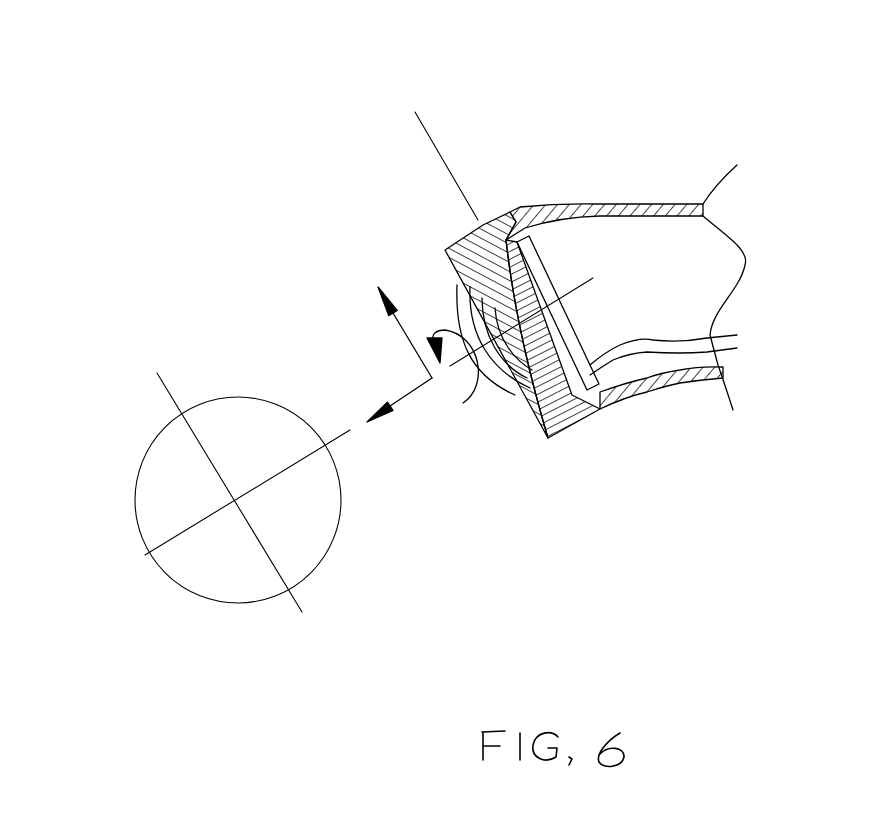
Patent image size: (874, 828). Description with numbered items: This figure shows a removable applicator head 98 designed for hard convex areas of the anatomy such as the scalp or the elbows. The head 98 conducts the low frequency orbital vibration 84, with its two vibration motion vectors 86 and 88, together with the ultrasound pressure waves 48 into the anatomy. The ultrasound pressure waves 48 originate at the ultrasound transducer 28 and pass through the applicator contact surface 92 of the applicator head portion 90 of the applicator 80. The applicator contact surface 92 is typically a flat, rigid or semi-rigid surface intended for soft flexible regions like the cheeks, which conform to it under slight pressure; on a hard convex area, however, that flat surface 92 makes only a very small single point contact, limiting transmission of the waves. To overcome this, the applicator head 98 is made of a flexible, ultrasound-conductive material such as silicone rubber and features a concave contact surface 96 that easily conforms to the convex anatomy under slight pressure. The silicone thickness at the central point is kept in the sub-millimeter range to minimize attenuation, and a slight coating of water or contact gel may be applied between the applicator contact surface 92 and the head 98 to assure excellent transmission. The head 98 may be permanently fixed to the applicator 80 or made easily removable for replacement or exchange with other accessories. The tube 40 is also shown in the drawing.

The ultrasound transducer 28 is at (532, 278).
The tube 40 is at (733, 357).
The ultrasound pressure waves 48 is at (513, 387).
The applicator 80 is at (748, 103).
The low frequency orbital vibration 84 is at (460, 407).
The vibration motion vector 86 is at (386, 397).
The vibration motion vector 88 is at (381, 328).
The applicator head portion 90 is at (727, 532).
The applicator contact surface 92 is at (437, 140).
The concave contact surface 96 is at (433, 247).
The applicator head 98 is at (600, 417).